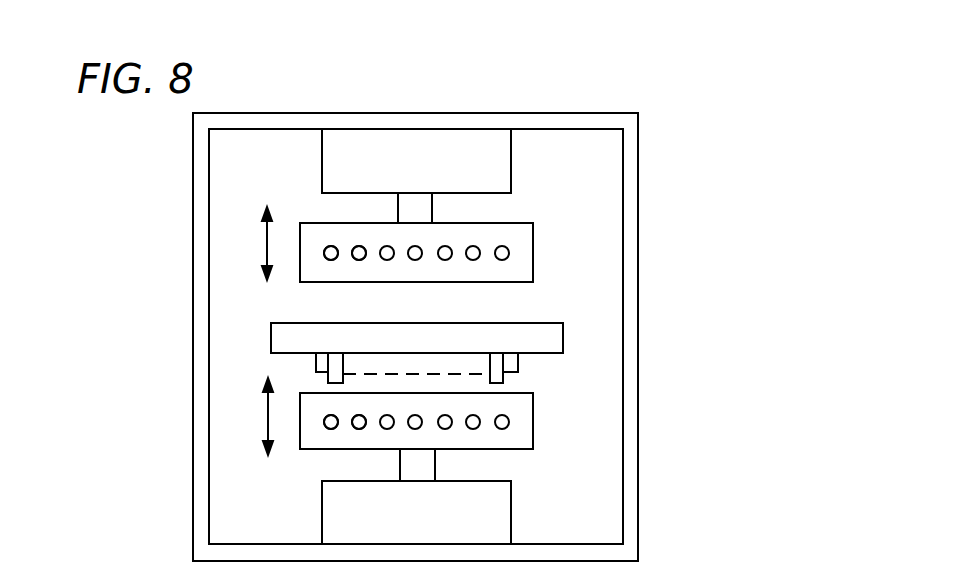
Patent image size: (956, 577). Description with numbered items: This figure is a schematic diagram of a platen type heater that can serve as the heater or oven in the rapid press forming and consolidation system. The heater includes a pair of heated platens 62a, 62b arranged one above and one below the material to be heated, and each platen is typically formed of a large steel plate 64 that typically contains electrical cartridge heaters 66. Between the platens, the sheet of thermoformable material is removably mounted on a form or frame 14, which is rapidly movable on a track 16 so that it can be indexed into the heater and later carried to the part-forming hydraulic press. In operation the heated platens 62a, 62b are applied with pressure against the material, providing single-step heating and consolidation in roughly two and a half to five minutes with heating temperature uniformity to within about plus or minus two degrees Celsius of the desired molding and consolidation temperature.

The form or frame 14 is at (563, 340).
The track 16 is at (503, 383).
The heated platen 62a is at (558, 222).
The heated platen 62b is at (563, 455).
The steel plate 64 is at (527, 247).
The electrical cartridge heater 66 is at (359, 246).